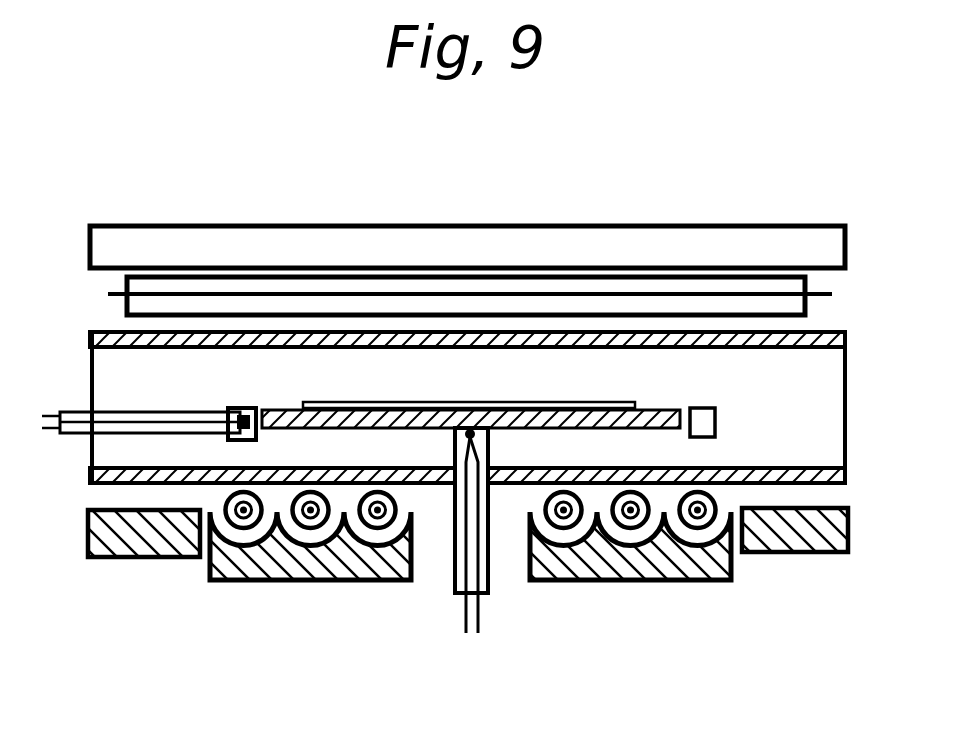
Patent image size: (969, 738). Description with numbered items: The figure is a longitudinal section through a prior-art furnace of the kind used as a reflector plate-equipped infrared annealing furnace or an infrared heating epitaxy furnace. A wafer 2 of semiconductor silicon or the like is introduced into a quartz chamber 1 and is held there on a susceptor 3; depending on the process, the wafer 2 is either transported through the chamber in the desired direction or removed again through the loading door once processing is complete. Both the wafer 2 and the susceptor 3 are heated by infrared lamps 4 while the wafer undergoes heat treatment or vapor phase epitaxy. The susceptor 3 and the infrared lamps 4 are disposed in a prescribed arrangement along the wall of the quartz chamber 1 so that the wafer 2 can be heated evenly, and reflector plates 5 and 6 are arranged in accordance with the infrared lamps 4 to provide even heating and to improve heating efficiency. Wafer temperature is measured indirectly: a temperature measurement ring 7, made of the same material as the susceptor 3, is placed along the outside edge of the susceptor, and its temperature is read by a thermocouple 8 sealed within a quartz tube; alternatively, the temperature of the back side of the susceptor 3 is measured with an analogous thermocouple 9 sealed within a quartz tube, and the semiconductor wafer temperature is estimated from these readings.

The quartz chamber 1 is at (835, 336).
The wafer 2 is at (322, 398).
The susceptor 3 is at (665, 410).
The infrared lamps 4 is at (118, 305).
The reflector plate 5 is at (807, 238).
The reflector plate 6 is at (822, 545).
The temperature measurement ring 7 is at (718, 422).
The thermocouple 8 is at (118, 420).
The thermocouple 9 is at (493, 553).